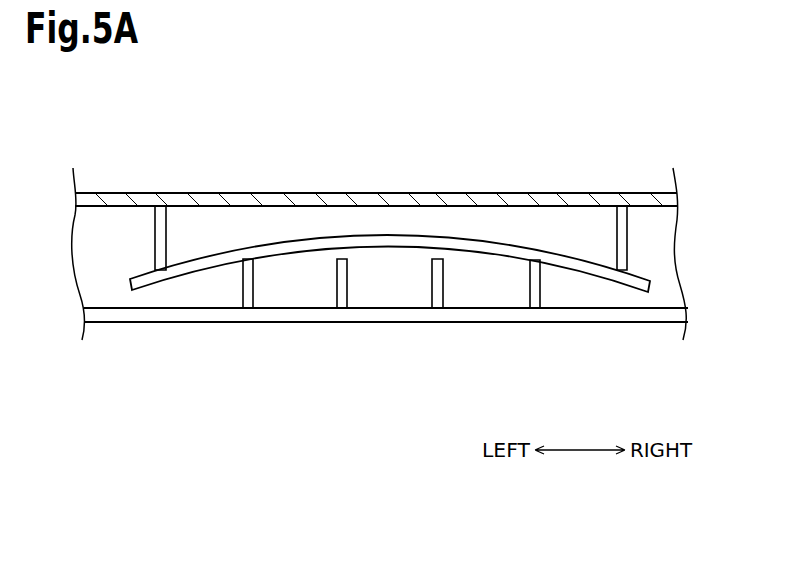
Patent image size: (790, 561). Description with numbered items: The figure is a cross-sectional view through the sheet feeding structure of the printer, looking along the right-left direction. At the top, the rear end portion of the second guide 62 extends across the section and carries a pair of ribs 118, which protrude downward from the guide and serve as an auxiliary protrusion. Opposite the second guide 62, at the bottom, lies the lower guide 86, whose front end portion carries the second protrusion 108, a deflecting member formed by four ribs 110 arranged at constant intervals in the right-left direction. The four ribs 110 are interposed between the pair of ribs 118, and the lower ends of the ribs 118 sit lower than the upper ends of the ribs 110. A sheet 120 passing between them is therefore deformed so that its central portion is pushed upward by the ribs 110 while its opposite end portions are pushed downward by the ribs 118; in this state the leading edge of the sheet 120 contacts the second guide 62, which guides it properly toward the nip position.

The second guide 62 is at (298, 200).
The lower guide 86 is at (163, 314).
The second protrusion 108 is at (376, 300).
The rib 110 is at (242, 302).
The rib 118 is at (157, 232).
The sheet 120 is at (410, 240).